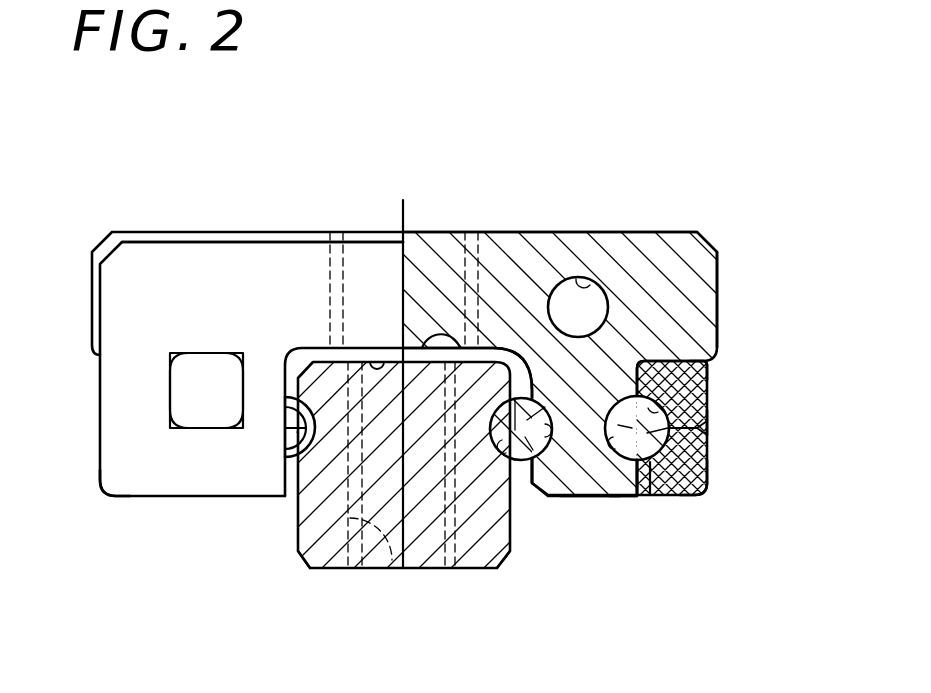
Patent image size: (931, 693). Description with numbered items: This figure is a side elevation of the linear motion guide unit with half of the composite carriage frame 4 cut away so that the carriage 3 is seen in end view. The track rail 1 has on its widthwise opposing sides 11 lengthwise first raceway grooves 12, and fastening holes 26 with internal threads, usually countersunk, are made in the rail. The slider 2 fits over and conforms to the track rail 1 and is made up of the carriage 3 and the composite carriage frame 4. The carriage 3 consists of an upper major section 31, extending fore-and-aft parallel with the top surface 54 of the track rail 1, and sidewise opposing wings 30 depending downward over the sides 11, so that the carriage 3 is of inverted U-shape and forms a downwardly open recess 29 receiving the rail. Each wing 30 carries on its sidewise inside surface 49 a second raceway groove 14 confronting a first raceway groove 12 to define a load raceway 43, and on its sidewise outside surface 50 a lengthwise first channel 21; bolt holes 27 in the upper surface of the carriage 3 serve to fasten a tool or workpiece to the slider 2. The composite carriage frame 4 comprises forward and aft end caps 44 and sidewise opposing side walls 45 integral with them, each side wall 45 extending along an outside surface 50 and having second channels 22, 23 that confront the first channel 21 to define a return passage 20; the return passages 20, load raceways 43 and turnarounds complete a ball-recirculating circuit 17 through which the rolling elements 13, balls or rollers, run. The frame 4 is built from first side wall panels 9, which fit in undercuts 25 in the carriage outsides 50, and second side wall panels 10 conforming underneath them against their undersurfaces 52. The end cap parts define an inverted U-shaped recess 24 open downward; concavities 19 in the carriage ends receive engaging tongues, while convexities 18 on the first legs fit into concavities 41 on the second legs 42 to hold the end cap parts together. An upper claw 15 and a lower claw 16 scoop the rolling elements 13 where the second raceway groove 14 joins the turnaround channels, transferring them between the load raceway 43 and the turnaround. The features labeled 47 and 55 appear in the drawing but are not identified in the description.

The track rail 1 is at (428, 517).
The slider 2 is at (530, 232).
The carriage 3 is at (162, 234).
The composite carriage frame 4 is at (708, 473).
The first side wall panels 9 is at (685, 392).
The second side wall panels 10 is at (700, 500).
The sides 11 is at (292, 513).
The first raceway grooves 12 is at (285, 410).
The rolling elements 13 is at (303, 365).
The second raceway grooves 14 is at (583, 452).
The upper claw 15 is at (283, 452).
The lower claw 16 is at (292, 438).
The ball-recirculating circuit 17 is at (530, 418).
The convexity 18 is at (200, 408).
The concavities 19 is at (592, 283).
The return passages 20 is at (688, 440).
The first channel 21 is at (624, 465).
The second channel 22 is at (660, 420).
The second channel 23 is at (645, 463).
The recess 24 is at (368, 353).
The undercuts 25 is at (708, 370).
The fastening holes 26 is at (392, 562).
The bolt hole 27 is at (338, 287).
The recess 29 is at (441, 341).
The wings 30 is at (598, 487).
The upper major section 31 is at (428, 323).
The concavity 41 is at (205, 355).
The second legs 42 is at (137, 400).
The load raceways 43 is at (515, 397).
The end caps 44 is at (128, 470).
The side walls 45 is at (708, 422).
The cover plate 47 is at (198, 295).
The sidewise inside surface 49 is at (530, 462).
The sidewise outside surfaces 50 is at (718, 310).
The undersurfaces 52 is at (705, 433).
The top surface 54 is at (462, 365).
The lower edge 55 is at (622, 465).